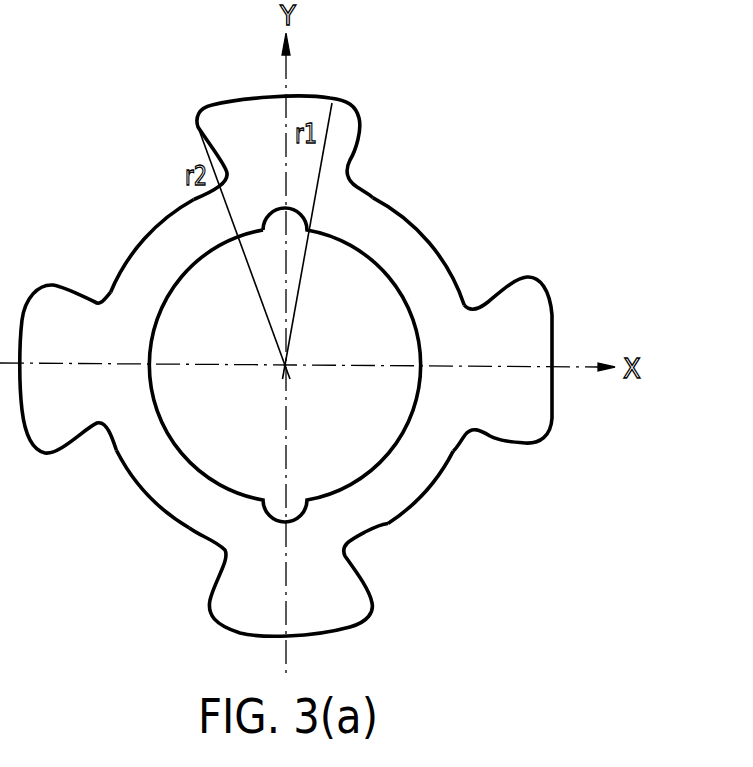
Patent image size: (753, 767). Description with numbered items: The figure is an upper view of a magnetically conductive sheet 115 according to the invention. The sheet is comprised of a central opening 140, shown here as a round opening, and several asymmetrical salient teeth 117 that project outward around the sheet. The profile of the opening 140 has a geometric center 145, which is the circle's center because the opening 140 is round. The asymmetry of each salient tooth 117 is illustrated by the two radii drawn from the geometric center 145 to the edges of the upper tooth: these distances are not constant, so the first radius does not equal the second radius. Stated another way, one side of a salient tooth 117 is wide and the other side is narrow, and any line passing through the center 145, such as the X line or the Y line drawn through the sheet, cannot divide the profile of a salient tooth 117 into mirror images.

The yoke body 115 is at (340, 352).
The salient tooth 117 is at (530, 340).
The central opening 140 is at (203, 433).
The geometric center 145 is at (285, 365).